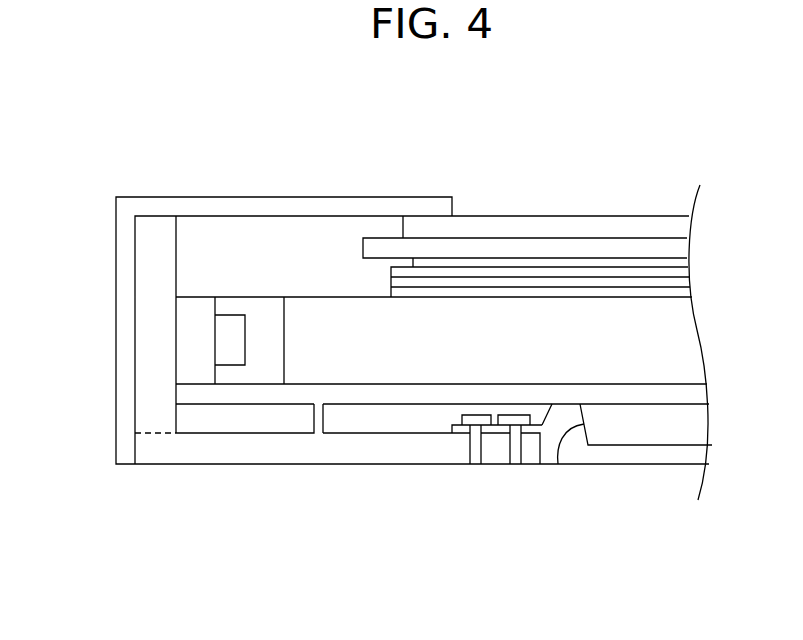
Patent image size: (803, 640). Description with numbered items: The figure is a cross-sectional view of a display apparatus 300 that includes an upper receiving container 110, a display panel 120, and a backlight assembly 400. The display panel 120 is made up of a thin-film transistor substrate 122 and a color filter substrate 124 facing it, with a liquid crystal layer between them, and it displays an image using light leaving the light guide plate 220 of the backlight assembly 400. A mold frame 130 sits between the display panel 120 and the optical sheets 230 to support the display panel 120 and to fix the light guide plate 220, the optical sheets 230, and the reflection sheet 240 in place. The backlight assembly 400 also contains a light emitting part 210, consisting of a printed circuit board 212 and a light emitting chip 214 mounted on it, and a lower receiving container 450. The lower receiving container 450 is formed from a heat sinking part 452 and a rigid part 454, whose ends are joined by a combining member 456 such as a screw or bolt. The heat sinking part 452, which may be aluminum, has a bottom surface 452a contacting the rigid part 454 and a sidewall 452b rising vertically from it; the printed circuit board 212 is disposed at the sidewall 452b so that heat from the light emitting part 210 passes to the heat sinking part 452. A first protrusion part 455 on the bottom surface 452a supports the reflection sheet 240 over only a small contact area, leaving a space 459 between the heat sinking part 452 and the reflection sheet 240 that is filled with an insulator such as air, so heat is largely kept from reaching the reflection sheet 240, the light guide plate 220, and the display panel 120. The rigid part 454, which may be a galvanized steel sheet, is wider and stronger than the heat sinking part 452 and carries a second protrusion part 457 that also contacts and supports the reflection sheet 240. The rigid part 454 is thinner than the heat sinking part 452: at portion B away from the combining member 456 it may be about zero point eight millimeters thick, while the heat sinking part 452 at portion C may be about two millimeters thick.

The display apparatus 300 is at (662, 168).
The upper receiving container 110 is at (295, 197).
The mold frame 130 is at (224, 226).
The display panel 120 is at (579, 256).
The color filter substrate 124 is at (687, 232).
The thin-film transistor substrate 122 is at (687, 248).
The optical sheets 230 is at (716, 268).
The light guide plate 220 is at (385, 340).
The light emitting part 210 is at (130, 340).
The light emitting chip 214 is at (223, 335).
The printed circuit board 212 is at (185, 368).
The reflection sheet 240 is at (465, 397).
The backlight assembly 400 is at (409, 366).
The lower receiving container 450 is at (419, 495).
The heat sinking part 452 is at (220, 478).
The bottom surface 452a is at (222, 440).
The sidewall 452b is at (160, 433).
The first protrusion part 455 is at (312, 428).
The space 459 is at (370, 425).
The portion C is at (423, 447).
The combining member 456 is at (491, 450).
The second protrusion part 457 is at (558, 465).
The rigid part 454 is at (597, 457).
The portion B is at (672, 488).